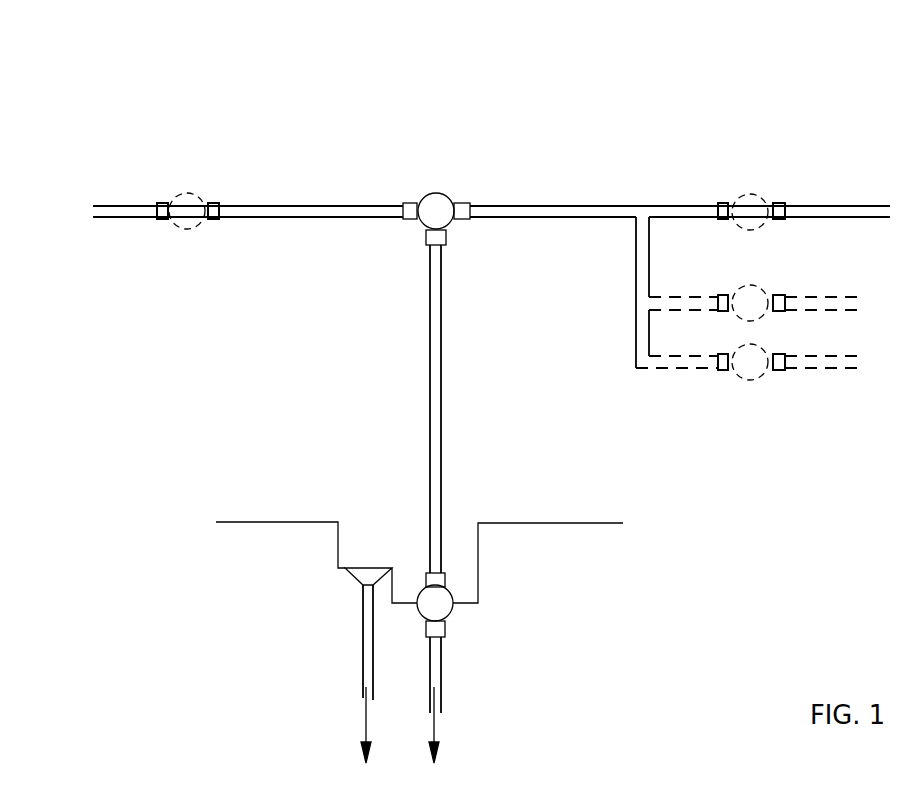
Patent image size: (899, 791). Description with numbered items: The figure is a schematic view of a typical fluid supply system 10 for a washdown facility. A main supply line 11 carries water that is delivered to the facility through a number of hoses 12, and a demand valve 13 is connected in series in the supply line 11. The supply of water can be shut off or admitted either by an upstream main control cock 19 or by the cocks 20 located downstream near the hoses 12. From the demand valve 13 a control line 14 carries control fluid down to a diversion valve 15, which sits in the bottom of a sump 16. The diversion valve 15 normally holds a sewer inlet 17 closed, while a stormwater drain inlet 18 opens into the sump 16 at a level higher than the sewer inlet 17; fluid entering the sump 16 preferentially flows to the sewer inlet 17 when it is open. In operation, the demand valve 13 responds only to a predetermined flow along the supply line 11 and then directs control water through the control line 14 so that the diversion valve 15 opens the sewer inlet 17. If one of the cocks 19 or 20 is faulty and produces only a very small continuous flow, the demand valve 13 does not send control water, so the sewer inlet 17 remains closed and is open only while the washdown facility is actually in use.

The fluid supply system 10 is at (658, 140).
The main supply line 11 is at (293, 206).
The hoses 12 is at (848, 206).
The demand valve 13 is at (452, 193).
The control line 14 is at (442, 445).
The diversion valve 15 is at (452, 593).
The sump 16 is at (337, 542).
The sewer inlet 17 is at (450, 627).
The stormwater drain inlet 18 is at (360, 592).
The main control cock 19 is at (193, 193).
The cocks 20 is at (763, 198).